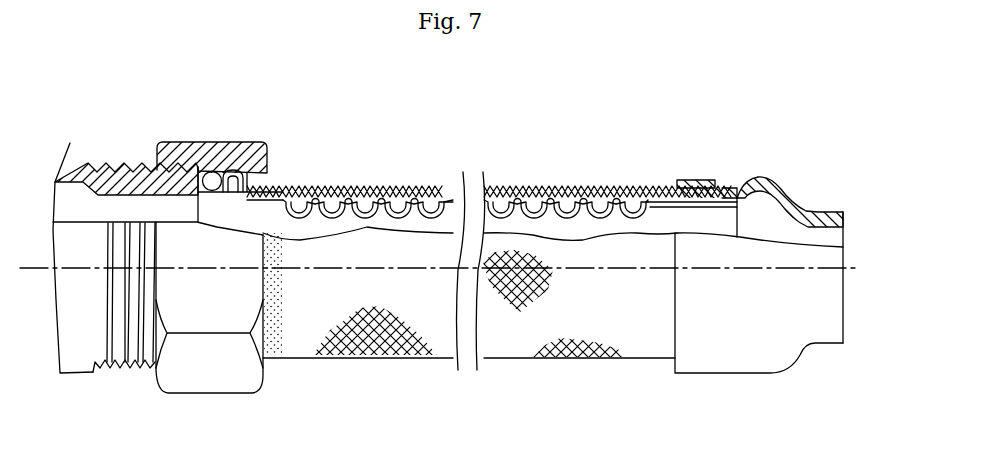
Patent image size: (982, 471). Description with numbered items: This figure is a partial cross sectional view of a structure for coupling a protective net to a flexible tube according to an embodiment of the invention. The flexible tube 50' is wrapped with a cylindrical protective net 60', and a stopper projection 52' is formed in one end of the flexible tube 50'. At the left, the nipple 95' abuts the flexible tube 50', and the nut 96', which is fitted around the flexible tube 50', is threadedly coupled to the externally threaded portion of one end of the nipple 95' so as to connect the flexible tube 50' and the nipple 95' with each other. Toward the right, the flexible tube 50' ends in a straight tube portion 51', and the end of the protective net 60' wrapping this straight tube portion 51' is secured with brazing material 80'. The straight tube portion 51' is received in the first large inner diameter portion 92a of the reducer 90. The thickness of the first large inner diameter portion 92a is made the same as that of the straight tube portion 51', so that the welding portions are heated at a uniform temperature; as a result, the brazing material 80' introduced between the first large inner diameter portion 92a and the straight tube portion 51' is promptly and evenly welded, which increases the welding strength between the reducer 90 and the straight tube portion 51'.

The nipple 95' is at (158, 262).
The nut 96' is at (212, 129).
The stopper projection 52' is at (240, 145).
The flexible tube 50' is at (465, 168).
The protective net 60' is at (489, 269).
The straight tube portion 51' is at (678, 169).
The brazing material 80' is at (707, 165).
The first large inner diameter portion 92a is at (730, 192).
The reducer 90 is at (782, 193).